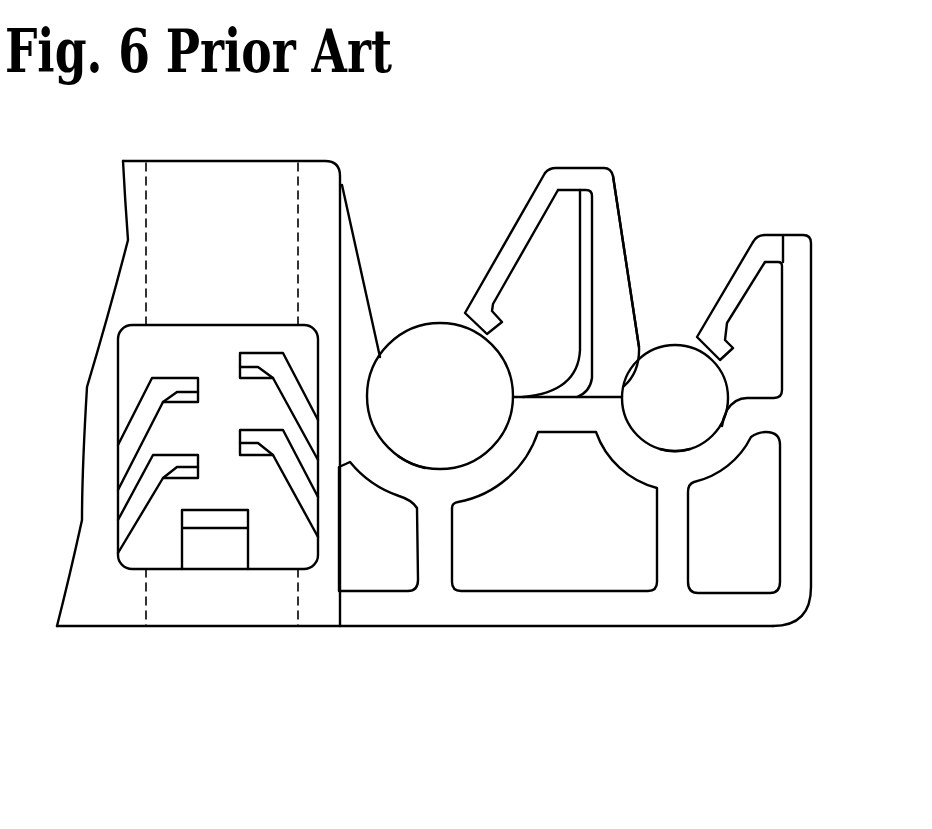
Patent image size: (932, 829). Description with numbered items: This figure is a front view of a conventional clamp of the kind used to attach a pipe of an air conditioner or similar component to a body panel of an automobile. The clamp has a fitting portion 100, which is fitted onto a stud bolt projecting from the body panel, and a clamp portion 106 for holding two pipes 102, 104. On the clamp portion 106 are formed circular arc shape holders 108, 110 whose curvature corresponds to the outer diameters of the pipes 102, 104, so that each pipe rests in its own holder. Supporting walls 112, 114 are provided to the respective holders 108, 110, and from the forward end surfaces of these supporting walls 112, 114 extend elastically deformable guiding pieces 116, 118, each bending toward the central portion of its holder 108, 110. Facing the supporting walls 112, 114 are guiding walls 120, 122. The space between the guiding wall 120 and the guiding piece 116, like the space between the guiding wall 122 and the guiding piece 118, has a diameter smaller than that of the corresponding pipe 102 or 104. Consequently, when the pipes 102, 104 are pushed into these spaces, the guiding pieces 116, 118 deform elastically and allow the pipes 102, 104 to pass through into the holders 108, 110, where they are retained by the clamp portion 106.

The fitting portion 100 is at (237, 662).
The pipe 102 is at (438, 355).
The pipe 104 is at (710, 392).
The clamp portion 106 is at (580, 646).
The circular arc shape holder 108 is at (400, 455).
The circular arc shape holder 110 is at (672, 443).
The supporting wall 112 is at (618, 293).
The supporting wall 114 is at (812, 338).
The guiding piece 116 is at (520, 230).
The guiding piece 118 is at (740, 273).
The guiding wall 120 is at (362, 267).
The guiding wall 122 is at (627, 232).